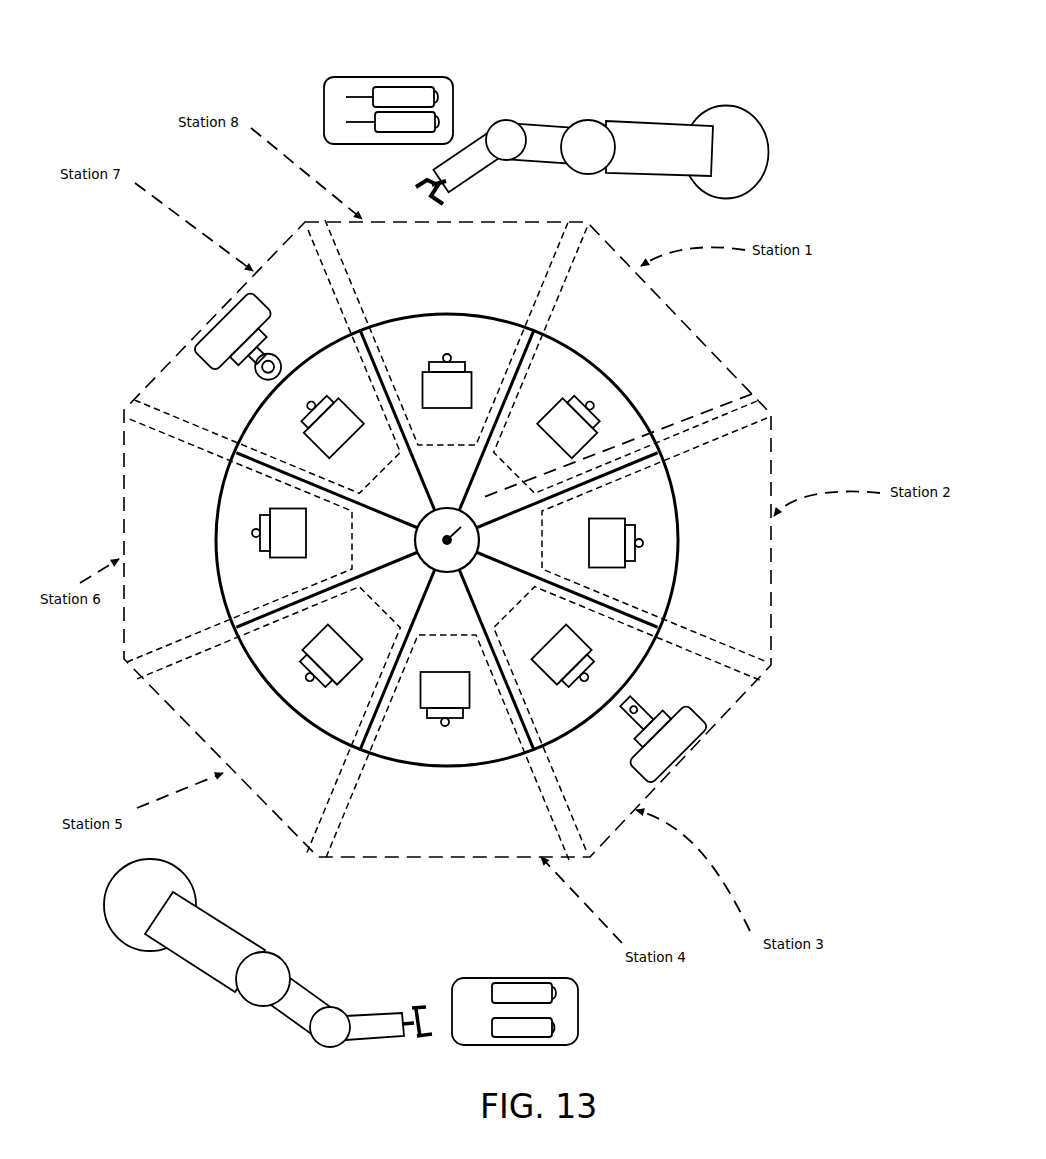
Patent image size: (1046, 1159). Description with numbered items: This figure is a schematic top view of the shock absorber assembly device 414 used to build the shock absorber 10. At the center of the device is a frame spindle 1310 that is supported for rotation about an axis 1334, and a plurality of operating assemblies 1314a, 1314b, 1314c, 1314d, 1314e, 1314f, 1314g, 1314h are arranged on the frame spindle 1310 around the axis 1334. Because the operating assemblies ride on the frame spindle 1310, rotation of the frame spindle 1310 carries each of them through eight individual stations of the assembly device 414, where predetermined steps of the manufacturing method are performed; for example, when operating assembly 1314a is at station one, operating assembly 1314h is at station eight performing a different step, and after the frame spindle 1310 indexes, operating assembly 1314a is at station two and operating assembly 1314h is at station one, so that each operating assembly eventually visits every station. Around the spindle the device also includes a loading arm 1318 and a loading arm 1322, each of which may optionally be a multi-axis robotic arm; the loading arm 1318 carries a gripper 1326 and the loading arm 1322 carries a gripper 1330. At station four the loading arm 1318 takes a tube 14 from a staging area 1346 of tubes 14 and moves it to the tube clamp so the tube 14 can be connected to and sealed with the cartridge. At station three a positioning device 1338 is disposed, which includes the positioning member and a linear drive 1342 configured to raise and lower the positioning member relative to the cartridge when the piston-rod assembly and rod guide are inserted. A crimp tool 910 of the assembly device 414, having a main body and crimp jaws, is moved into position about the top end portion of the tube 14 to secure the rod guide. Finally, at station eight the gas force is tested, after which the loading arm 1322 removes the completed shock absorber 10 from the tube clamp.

The shock absorber 10 is at (402, 114).
The tube 14 is at (515, 998).
The shock absorber assembly device 414 is at (833, 188).
The crimp tool 910 is at (204, 372).
The frame spindle 1310 is at (662, 565).
The operating assembly 1314a is at (603, 410).
The operating assembly 1314b is at (646, 530).
The operating assembly 1314c is at (599, 667).
The operating assembly 1314d is at (462, 727).
The operating assembly 1314e is at (297, 673).
The operating assembly 1314f is at (254, 516).
The operating assembly 1314g is at (338, 390).
The operating assembly 1314h is at (449, 348).
The loading arm 1318 is at (292, 1033).
The loading arm 1322 is at (529, 106).
The gripper 1326 is at (425, 1036).
The gripper 1330 is at (418, 187).
The axis 1334 is at (760, 393).
The positioning device 1338 is at (707, 712).
The linear drive 1342 is at (670, 730).
The staging area 1346 is at (584, 1007).